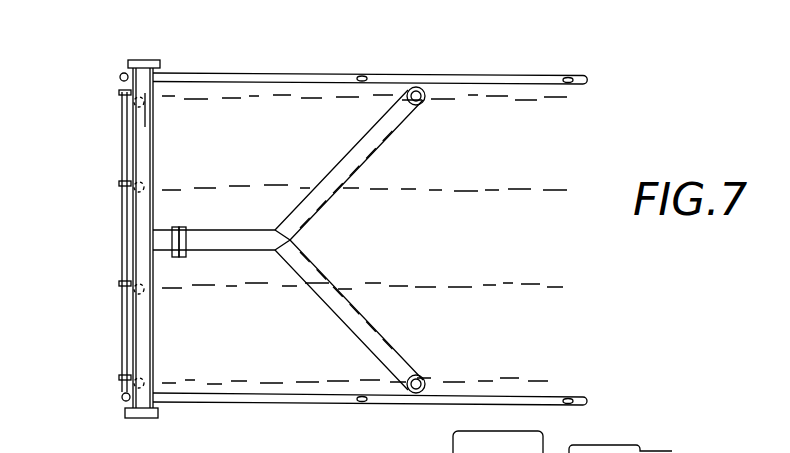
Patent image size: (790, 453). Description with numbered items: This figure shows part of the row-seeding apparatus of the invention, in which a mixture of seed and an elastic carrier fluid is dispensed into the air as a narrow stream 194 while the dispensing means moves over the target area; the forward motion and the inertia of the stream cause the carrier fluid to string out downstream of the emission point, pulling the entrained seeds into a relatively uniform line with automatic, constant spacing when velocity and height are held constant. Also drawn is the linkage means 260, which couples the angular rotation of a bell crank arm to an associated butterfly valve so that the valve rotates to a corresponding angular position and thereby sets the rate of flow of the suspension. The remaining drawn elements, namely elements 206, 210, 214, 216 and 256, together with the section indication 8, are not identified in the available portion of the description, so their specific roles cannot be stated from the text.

The narrow stream 194 is at (283, 97).
The apertures 206 is at (145, 107).
The upper arm 210 is at (388, 135).
The tubular member 214 is at (296, 215).
The lower arm 216 is at (263, 242).
The tube 256 is at (125, 255).
The linkage means 260 is at (125, 182).
The section line 8- 8 is at (115, 243).